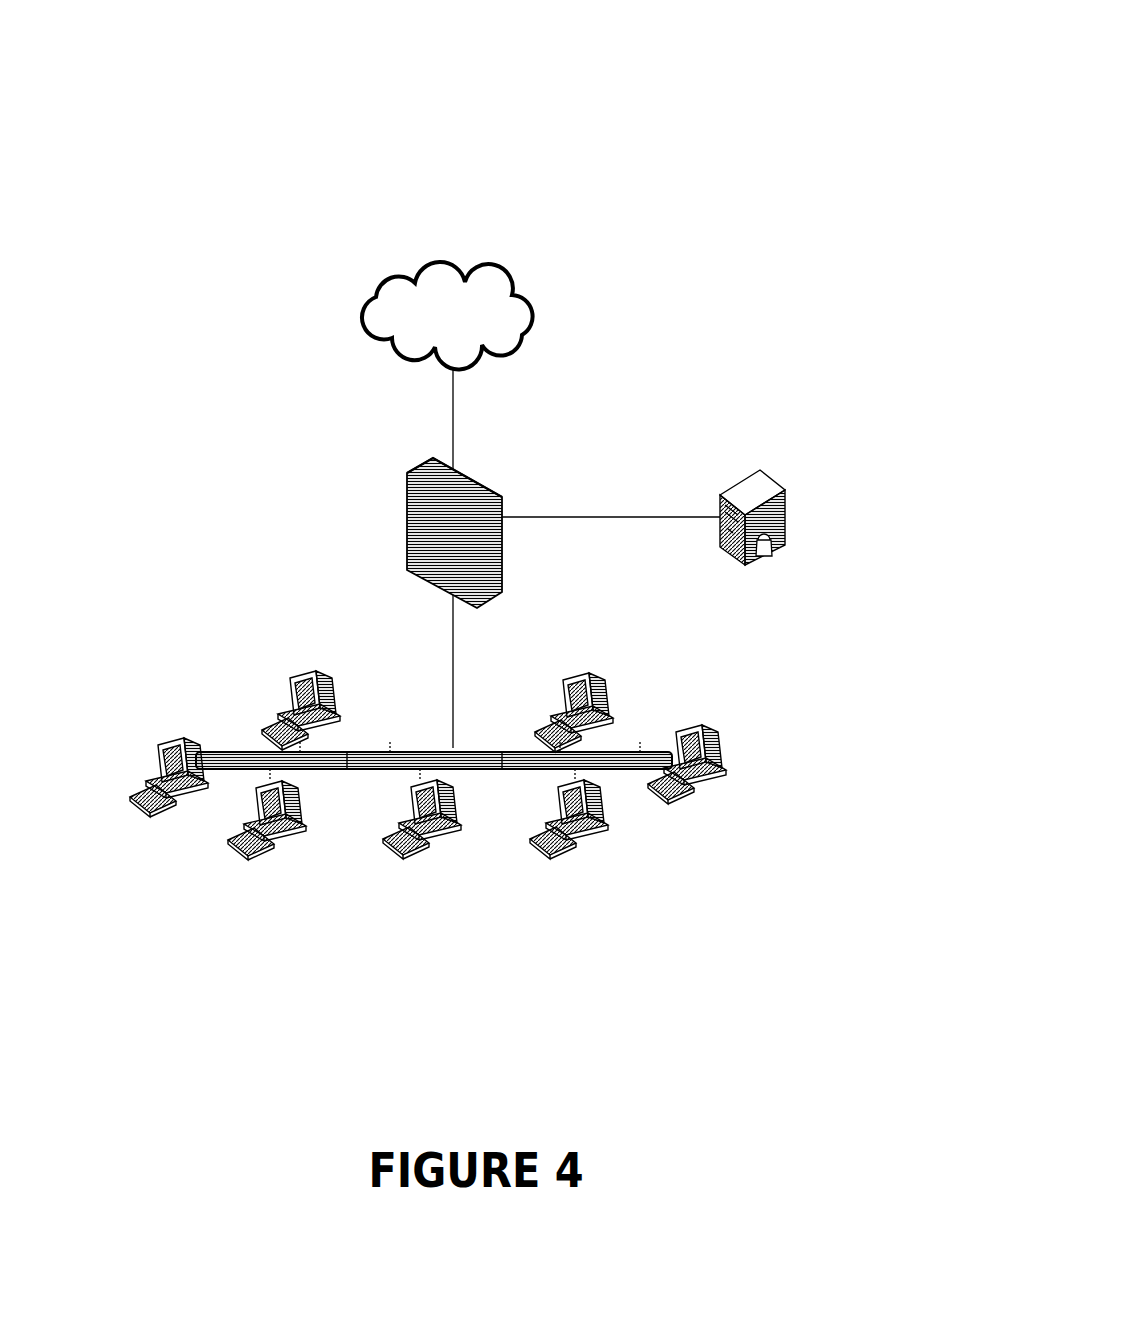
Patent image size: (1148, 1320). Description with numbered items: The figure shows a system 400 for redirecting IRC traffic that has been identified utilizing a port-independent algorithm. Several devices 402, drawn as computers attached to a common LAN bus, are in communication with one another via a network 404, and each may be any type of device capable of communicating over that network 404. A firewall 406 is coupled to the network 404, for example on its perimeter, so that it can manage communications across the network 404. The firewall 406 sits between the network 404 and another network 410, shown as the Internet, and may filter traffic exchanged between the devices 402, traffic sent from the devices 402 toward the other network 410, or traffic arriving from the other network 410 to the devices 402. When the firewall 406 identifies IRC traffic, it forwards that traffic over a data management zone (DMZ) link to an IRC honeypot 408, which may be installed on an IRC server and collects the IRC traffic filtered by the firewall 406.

The system 400 is at (838, 137).
The devices 402 is at (273, 867).
The network 404 is at (218, 752).
The firewall 406 is at (490, 493).
The IRC honeypot 408 is at (777, 490).
The other network 410 is at (527, 280).